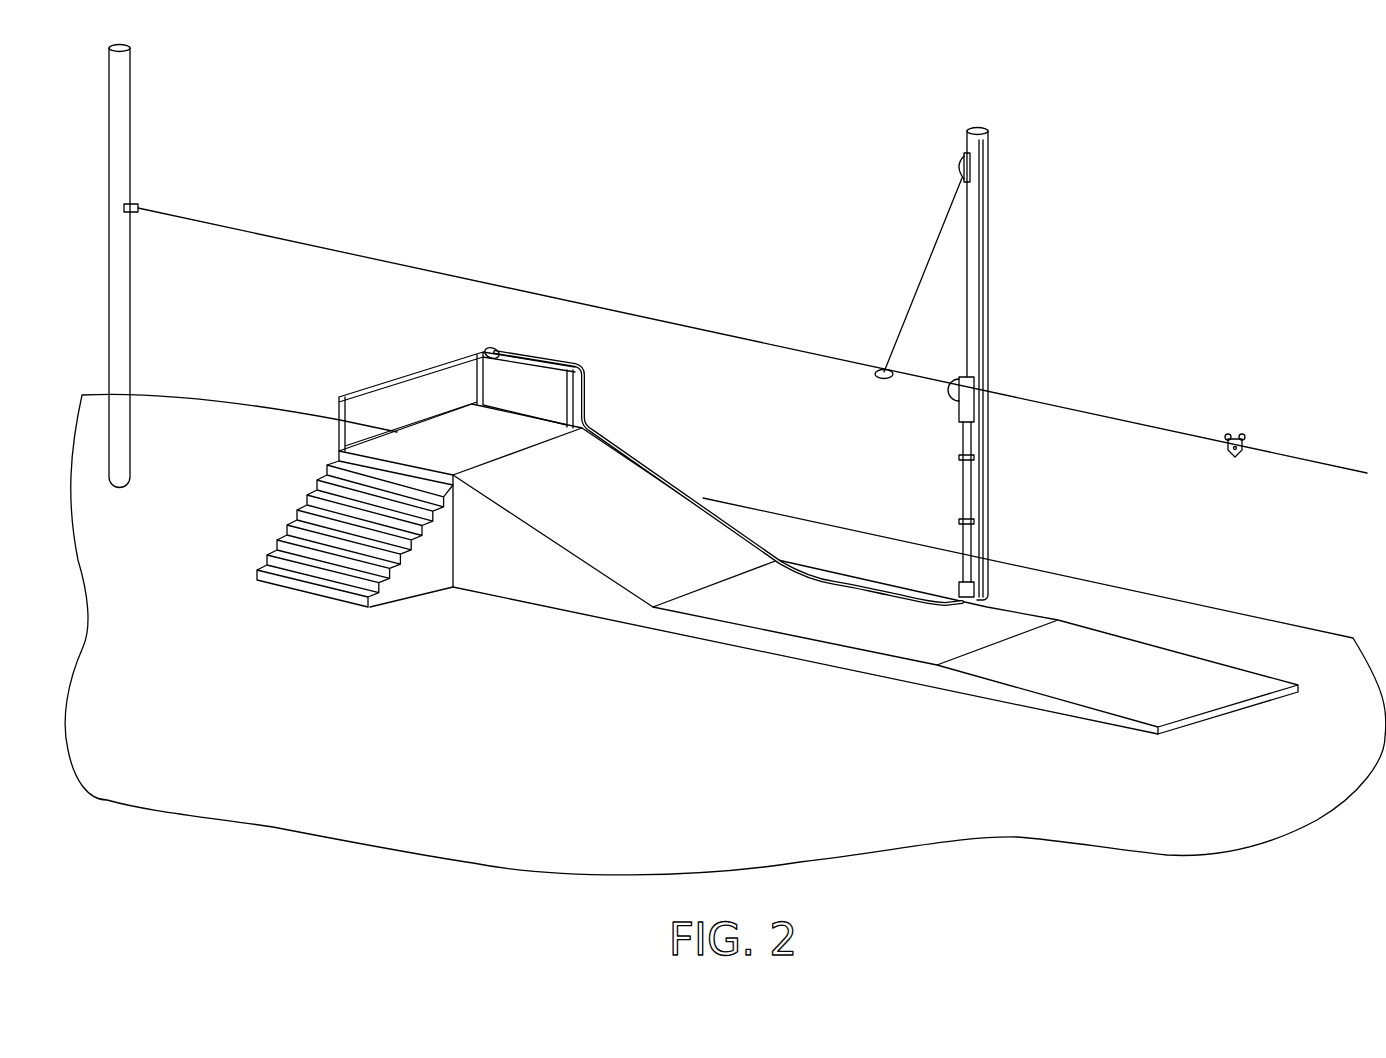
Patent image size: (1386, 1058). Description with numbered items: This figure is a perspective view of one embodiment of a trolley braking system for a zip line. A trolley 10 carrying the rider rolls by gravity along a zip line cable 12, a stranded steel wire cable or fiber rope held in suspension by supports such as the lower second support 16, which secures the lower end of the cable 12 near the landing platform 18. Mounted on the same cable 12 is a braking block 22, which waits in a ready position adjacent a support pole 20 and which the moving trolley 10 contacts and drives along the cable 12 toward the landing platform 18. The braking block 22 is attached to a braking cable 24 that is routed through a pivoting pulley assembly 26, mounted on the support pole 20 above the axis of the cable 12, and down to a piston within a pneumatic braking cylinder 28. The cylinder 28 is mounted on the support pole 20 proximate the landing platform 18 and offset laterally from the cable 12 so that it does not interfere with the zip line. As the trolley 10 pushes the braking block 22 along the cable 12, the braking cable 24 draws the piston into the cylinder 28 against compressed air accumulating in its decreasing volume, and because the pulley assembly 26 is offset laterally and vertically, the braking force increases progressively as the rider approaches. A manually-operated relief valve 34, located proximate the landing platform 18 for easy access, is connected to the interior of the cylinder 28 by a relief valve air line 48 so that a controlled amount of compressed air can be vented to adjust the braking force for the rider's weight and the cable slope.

The trolley 10 is at (1242, 438).
The zip line cable 12 is at (610, 308).
The second support 16 is at (130, 158).
The landing platform 18 is at (593, 465).
The support pole 20 is at (988, 243).
The braking block 22 is at (878, 367).
The braking cable 24 is at (914, 290).
The pivoting pulley assembly 26 is at (957, 165).
The braking cylinder 28 is at (961, 485).
The manually-operated relief valve 34 is at (487, 350).
The relief valve air line 48 is at (587, 420).